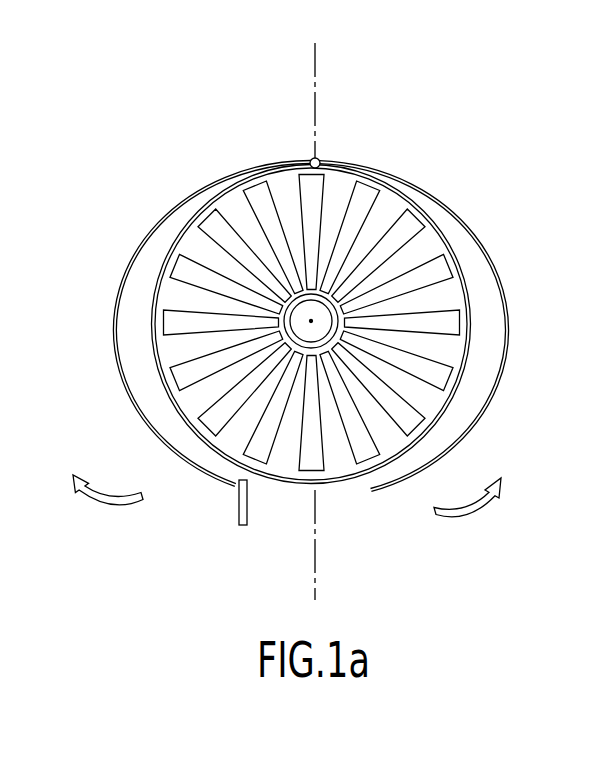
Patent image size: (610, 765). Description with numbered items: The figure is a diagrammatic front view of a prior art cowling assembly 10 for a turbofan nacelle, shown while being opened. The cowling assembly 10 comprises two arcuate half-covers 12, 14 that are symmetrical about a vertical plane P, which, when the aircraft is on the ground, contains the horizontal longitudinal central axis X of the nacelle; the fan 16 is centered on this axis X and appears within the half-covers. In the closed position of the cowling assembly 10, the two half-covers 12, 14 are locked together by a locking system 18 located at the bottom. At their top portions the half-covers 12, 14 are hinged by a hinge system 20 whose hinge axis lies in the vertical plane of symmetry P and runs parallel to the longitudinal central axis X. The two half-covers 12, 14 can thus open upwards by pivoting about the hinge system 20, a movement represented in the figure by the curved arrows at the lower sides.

The cowling assembly 10 is at (186, 130).
The arcuate half-cover 12 is at (142, 235).
The arcuate half-cover 14 is at (470, 218).
The fan 16 is at (446, 383).
The locking system 18 is at (228, 522).
The hinge system 20 is at (318, 158).
The vertical plane P is at (317, 77).
The longitudinal central axis X is at (311, 321).